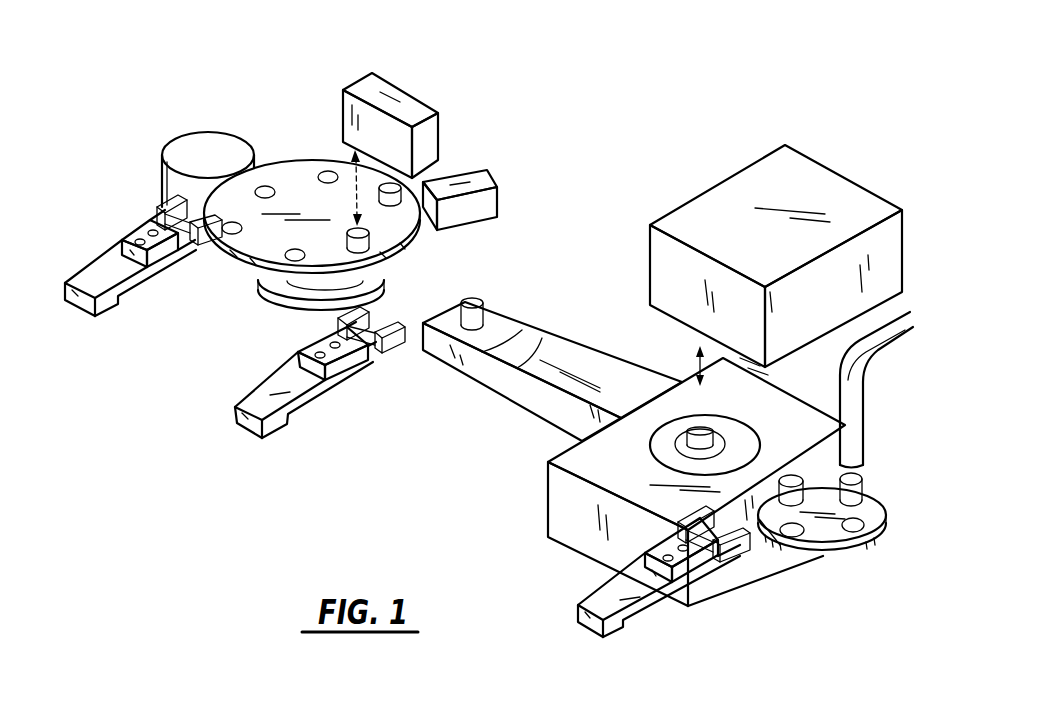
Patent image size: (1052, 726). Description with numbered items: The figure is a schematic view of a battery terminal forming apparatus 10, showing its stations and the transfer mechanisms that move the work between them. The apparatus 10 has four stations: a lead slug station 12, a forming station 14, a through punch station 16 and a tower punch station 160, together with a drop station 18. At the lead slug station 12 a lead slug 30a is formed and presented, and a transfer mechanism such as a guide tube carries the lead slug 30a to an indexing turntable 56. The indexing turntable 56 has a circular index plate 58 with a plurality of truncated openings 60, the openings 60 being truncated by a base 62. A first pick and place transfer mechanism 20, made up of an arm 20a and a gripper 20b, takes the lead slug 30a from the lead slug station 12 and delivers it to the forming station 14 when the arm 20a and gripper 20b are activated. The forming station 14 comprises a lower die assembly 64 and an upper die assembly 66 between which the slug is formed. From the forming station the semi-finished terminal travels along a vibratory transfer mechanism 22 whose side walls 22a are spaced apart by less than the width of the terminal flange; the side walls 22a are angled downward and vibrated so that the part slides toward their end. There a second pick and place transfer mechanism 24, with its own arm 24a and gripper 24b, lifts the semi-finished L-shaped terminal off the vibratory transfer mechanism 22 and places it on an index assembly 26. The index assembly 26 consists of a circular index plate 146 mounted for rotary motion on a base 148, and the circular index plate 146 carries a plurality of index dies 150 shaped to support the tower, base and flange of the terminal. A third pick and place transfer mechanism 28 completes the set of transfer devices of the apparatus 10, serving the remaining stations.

The battery terminal forming apparatus 10 is at (490, 354).
The lead slug station 12 is at (839, 473).
The forming station 14 is at (746, 243).
The through punch station 16 is at (435, 85).
The drop station 18 is at (166, 129).
The first pick and place transfer mechanism 20 is at (632, 600).
The arm 20a is at (597, 600).
The gripper 20b is at (737, 556).
The vibratory transfer mechanism 22 is at (551, 367).
The side walls 22a is at (545, 340).
The second pick and place transfer mechanism 24 is at (305, 404).
The arm 24a is at (268, 398).
The gripper 24b is at (398, 352).
The index assembly 26 is at (333, 219).
The third pick and place transfer mechanism 28 is at (100, 328).
The lead slug 30a is at (862, 482).
The indexing turntable 56 is at (806, 572).
The circular index plate 58 is at (838, 540).
The truncated openings 60 is at (858, 522).
The base 62 is at (795, 552).
The lower die assembly 64 is at (548, 505).
The upper die assembly 66 is at (663, 268).
The circular index plate 146 is at (400, 237).
The base 148 is at (382, 283).
The index dies 150 is at (325, 171).
The tower punch station 160 is at (512, 183).